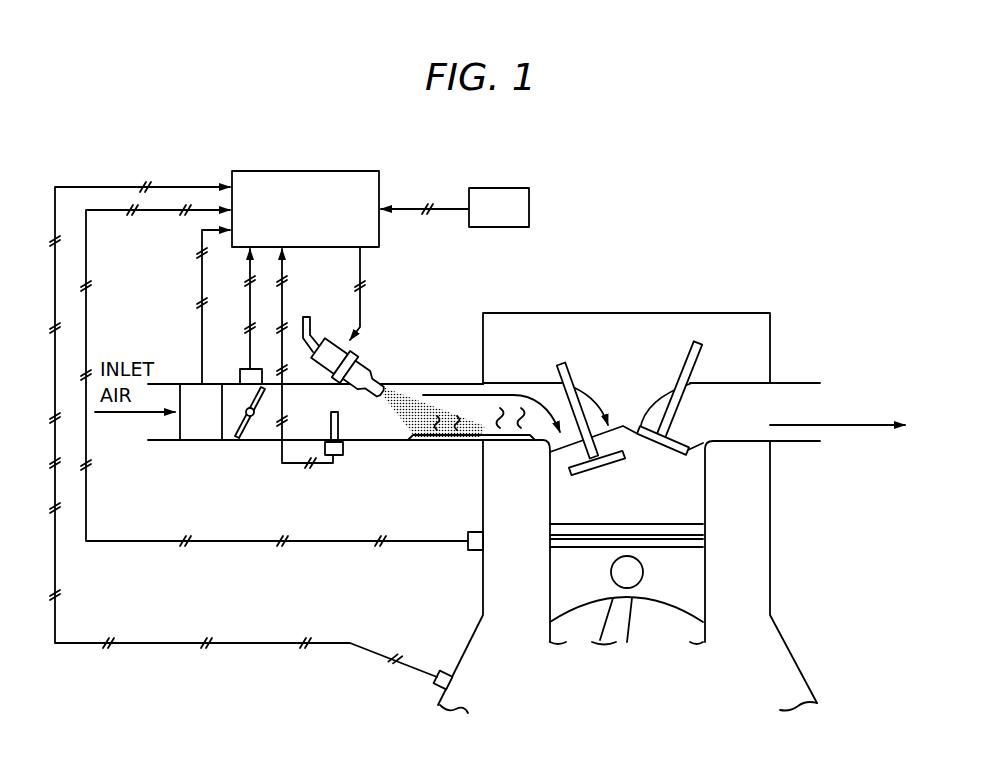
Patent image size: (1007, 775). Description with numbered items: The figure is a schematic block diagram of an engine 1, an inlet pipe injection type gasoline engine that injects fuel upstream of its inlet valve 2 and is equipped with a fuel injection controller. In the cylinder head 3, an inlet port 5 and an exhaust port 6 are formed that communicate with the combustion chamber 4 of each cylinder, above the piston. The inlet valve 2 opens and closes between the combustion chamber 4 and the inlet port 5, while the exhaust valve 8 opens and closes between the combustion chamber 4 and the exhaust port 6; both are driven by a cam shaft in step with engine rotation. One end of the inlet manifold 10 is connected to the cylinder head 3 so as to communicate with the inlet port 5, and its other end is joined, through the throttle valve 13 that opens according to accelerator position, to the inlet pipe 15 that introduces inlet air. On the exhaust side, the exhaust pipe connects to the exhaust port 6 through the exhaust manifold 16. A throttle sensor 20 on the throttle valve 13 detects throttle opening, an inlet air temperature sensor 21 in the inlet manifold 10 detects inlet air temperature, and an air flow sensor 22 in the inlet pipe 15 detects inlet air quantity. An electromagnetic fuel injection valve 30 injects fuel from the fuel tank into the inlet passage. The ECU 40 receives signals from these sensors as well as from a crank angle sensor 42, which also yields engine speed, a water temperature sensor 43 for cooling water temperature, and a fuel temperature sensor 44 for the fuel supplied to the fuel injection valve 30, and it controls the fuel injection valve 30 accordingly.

The engine 1 is at (806, 238).
The inlet valve 2 is at (580, 372).
The cylinder head 3 is at (717, 313).
The combustion chamber 4 is at (692, 510).
The inlet port 5 is at (541, 441).
The exhaust port 6 is at (728, 418).
The exhaust valve 8 is at (663, 413).
The inlet manifold 10 is at (383, 443).
The throttle valve 13 is at (250, 441).
The inlet pipe 15 is at (162, 446).
The exhaust manifold 16 is at (793, 441).
The throttle sensor 20 is at (245, 370).
The inlet air temperature sensor 21 is at (340, 456).
The air flow sensor 22 is at (190, 382).
The fuel injection valve 30 is at (362, 362).
The ECU 40 is at (381, 190).
The crank angle sensor 42 is at (443, 668).
The water temperature sensor 43 is at (470, 532).
The fuel temperature sensor 44 is at (530, 203).